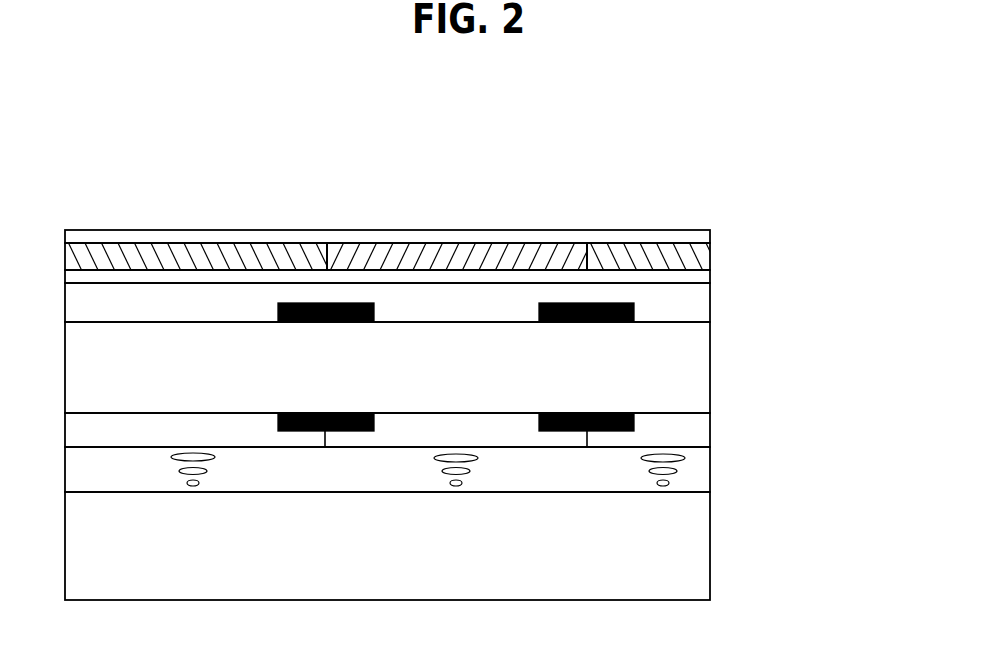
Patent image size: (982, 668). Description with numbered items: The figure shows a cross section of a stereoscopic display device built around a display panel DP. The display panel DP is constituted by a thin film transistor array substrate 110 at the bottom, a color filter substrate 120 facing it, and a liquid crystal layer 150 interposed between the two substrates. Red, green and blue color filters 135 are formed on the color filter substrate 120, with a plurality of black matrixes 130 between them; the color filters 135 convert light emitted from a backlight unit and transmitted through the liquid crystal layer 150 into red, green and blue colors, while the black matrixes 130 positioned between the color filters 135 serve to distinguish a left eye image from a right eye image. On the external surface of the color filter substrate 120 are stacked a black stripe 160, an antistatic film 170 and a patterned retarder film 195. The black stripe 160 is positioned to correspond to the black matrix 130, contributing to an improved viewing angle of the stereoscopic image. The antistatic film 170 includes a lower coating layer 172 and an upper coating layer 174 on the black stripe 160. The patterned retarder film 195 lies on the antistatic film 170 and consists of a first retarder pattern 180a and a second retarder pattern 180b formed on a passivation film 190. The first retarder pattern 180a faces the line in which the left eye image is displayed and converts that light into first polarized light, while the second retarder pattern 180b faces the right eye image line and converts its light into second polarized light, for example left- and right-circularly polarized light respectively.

The thin film transistor array substrate 110 is at (700, 543).
The color filter substrate 120 is at (700, 353).
The black matrix 130 is at (622, 413).
The color filter 135 is at (700, 433).
The liquid crystal layer 150 is at (700, 475).
The black stripe 160 is at (296, 303).
The antistatic film 170 is at (806, 257).
The lower coating layer 172 is at (700, 301).
The upper coating layer 174 is at (700, 276).
The first retarder pattern 180a is at (523, 253).
The second retarder pattern 180b is at (636, 253).
The passivation film 190 is at (420, 236).
The patterned retarder film 195 is at (652, 152).
The display panel DP is at (812, 337).